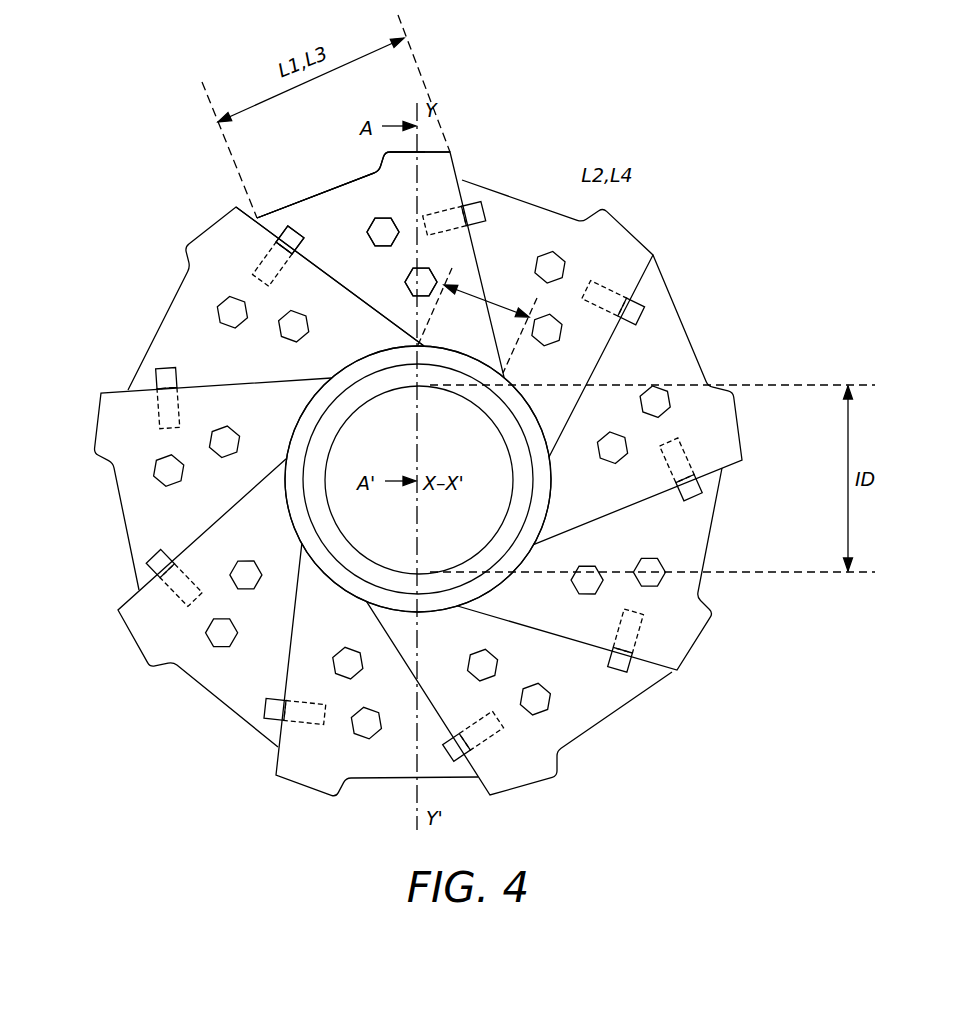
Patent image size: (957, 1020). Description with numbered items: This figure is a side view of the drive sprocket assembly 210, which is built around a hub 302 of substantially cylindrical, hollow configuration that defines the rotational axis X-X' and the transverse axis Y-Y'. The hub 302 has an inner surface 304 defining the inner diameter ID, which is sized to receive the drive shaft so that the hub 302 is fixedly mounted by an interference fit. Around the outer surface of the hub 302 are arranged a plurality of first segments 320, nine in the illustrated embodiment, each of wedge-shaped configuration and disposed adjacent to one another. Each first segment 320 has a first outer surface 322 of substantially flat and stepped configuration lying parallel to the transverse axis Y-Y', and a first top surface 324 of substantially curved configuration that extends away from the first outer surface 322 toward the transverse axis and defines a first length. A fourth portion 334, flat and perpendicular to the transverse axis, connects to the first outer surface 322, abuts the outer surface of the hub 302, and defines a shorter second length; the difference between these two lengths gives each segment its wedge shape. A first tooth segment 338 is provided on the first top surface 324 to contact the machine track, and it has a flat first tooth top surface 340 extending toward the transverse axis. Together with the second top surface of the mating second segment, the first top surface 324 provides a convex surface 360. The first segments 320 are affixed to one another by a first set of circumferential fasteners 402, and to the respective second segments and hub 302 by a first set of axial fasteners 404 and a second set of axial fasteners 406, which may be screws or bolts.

The drive sprocket assembly 210 is at (810, 178).
The hub 302 is at (287, 497).
The inner surface 304 is at (350, 545).
The first segments 320 is at (282, 208).
The first outer surface 322 is at (343, 270).
The first top surface 324 is at (292, 216).
The fourth portion 334 is at (436, 358).
The first tooth segment 338 is at (432, 163).
The first tooth top surface 340 is at (425, 152).
The convex surface 360 is at (352, 172).
The first set of circumferential fasteners 402 is at (278, 233).
The first set of axial fasteners 404 is at (424, 278).
The second set of axial fasteners 406 is at (375, 230).